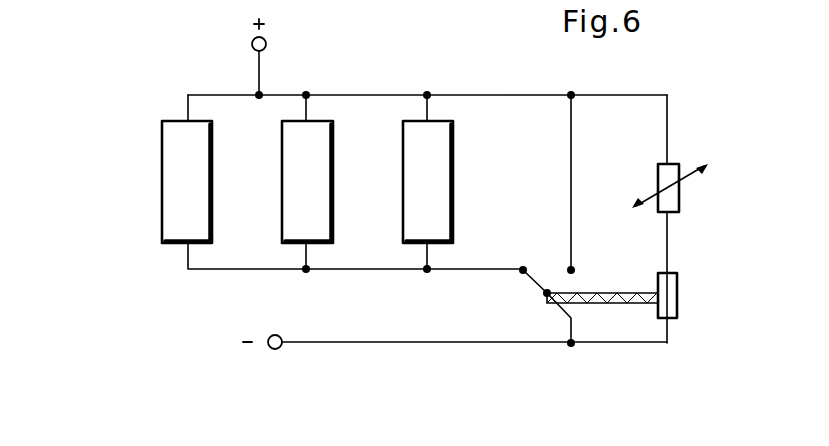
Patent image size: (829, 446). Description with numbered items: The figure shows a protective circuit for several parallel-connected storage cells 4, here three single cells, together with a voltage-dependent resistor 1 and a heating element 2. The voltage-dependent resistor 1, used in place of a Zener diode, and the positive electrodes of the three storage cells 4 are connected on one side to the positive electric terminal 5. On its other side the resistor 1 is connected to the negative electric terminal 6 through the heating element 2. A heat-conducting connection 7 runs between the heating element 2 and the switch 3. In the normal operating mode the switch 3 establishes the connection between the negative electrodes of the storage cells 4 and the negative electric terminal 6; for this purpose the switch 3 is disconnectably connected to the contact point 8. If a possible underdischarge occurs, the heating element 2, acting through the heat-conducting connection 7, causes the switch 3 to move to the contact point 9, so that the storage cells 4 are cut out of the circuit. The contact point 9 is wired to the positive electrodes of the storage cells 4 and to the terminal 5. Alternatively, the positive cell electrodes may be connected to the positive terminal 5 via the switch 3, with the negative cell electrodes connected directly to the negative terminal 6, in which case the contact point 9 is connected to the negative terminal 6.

The voltage-dependent resistor 1 is at (682, 196).
The heating element 2 is at (680, 305).
The switch 3 is at (546, 299).
The storage cells 4 is at (467, 197).
The positive electric terminal 5 is at (267, 45).
The negative electric terminal 6 is at (275, 349).
The heat-conducting connection 7 is at (614, 290).
The contact point 8 is at (521, 277).
The contact point 9 is at (568, 269).